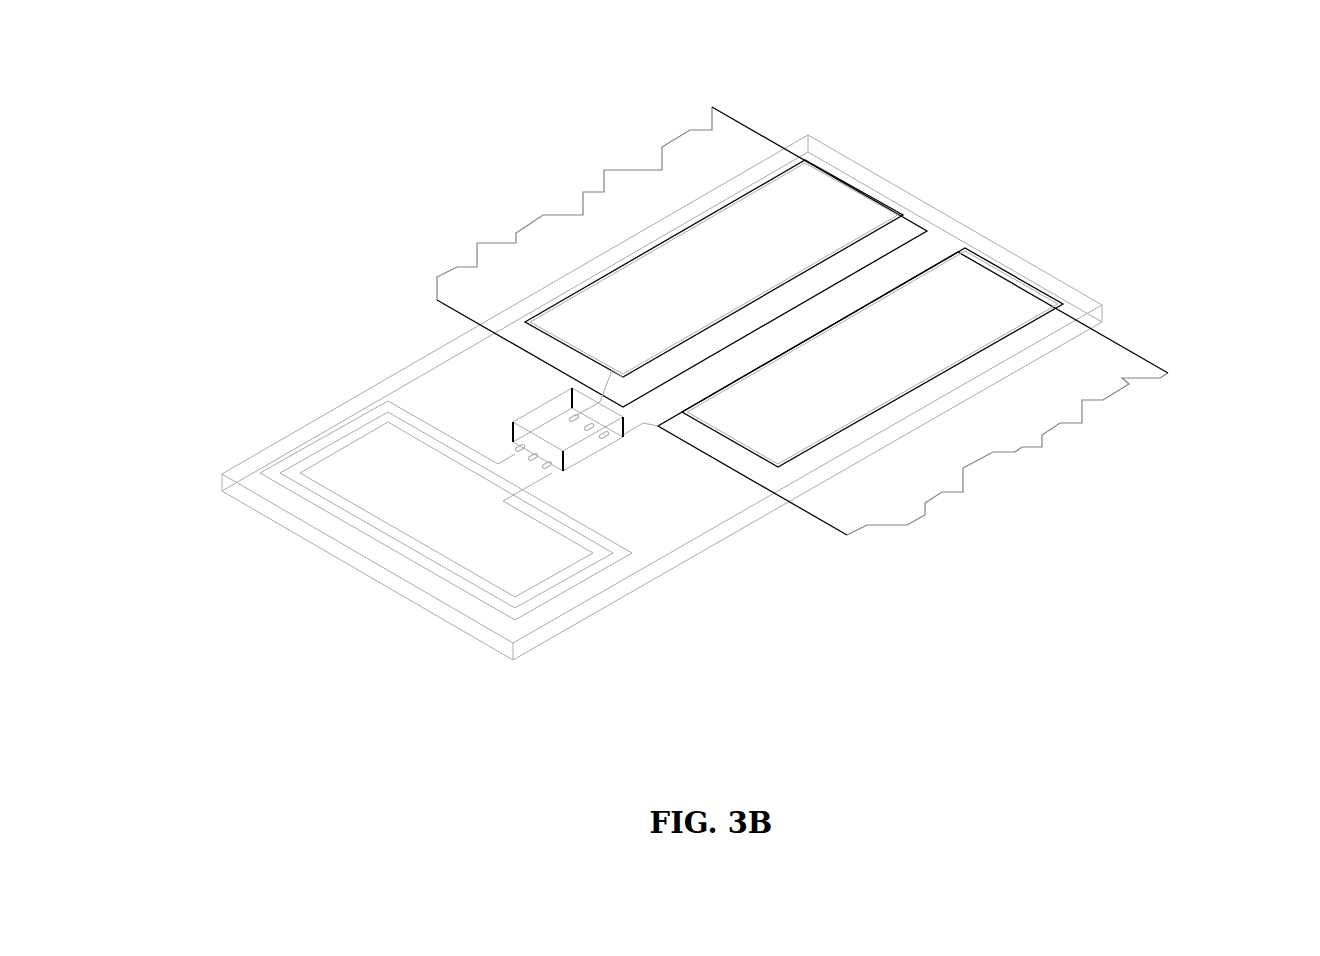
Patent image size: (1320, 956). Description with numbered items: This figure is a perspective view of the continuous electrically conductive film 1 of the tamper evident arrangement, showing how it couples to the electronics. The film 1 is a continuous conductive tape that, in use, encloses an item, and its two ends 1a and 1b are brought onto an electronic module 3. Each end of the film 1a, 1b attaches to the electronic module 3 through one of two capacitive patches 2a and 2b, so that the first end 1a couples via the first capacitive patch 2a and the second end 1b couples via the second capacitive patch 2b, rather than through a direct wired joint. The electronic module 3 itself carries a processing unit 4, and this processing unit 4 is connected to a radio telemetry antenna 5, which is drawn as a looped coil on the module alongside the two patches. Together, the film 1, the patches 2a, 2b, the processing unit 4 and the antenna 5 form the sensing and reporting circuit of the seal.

The continuous electrically conductive film 1 is at (717, 355).
The first end of the film 1a is at (743, 130).
The second end of the film 1b is at (1127, 340).
The first capacitive patch 2a is at (855, 173).
The second capacitive patch 2b is at (1018, 263).
The electronic module 3 is at (725, 533).
The processing unit 4 is at (525, 395).
The radio telemetry antenna 5 is at (315, 430).